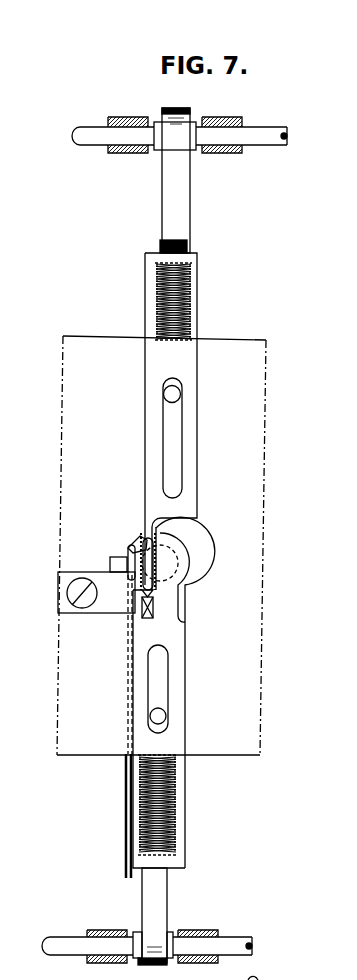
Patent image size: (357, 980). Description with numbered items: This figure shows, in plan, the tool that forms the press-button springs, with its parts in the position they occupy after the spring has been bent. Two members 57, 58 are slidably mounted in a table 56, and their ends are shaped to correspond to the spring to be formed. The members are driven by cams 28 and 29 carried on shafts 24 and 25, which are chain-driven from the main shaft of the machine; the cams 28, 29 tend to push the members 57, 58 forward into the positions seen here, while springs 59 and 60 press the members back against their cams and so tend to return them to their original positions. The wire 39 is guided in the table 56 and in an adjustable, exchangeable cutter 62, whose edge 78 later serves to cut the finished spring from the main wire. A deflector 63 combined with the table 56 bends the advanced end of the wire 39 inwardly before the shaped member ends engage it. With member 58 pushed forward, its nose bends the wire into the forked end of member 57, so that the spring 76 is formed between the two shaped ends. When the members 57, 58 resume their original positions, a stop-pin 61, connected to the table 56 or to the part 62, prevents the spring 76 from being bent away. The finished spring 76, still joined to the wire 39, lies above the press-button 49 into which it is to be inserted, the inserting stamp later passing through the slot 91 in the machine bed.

The shaft 24 is at (232, 943).
The shaft 25 is at (253, 145).
The cam 28 is at (165, 903).
The cam 29 is at (185, 208).
The wire 39 is at (140, 855).
The press-button 49 is at (188, 549).
The table 56 is at (161, 504).
The member 57 is at (184, 675).
The member 58 is at (193, 401).
The spring 59 is at (172, 810).
The spring 60 is at (183, 291).
The stop-pin 61 is at (153, 616).
The cutter 62 is at (117, 608).
The deflector 63 is at (139, 545).
The spring 76 is at (150, 582).
The edge 78 is at (129, 571).
The slot 91 is at (127, 557).